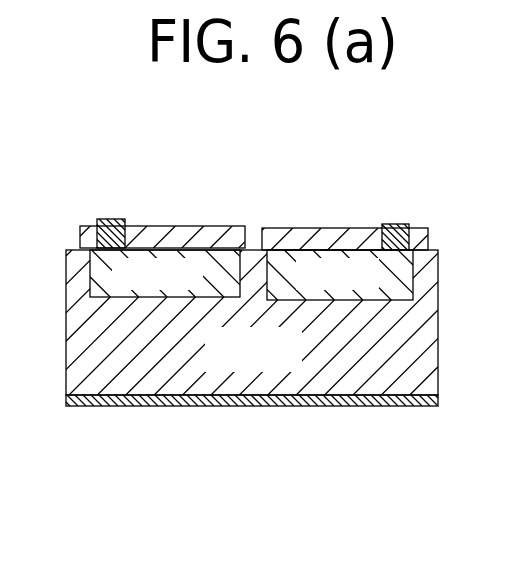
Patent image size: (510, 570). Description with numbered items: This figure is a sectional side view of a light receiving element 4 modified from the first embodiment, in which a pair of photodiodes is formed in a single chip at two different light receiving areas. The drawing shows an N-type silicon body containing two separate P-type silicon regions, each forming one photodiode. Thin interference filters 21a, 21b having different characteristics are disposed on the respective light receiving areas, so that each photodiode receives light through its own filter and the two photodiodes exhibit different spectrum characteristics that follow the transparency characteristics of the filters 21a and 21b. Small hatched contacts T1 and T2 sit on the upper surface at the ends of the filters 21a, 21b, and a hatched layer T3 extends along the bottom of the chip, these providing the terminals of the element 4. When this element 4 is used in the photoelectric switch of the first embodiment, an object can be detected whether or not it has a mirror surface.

The light receiving element 4 is at (455, 300).
The interference filter 21a is at (163, 237).
The interference filter 21b is at (326, 237).
The first terminal electrode T1 is at (107, 219).
The second terminal electrode T2 is at (397, 224).
The third terminal electrode (bottom) T3 is at (332, 408).